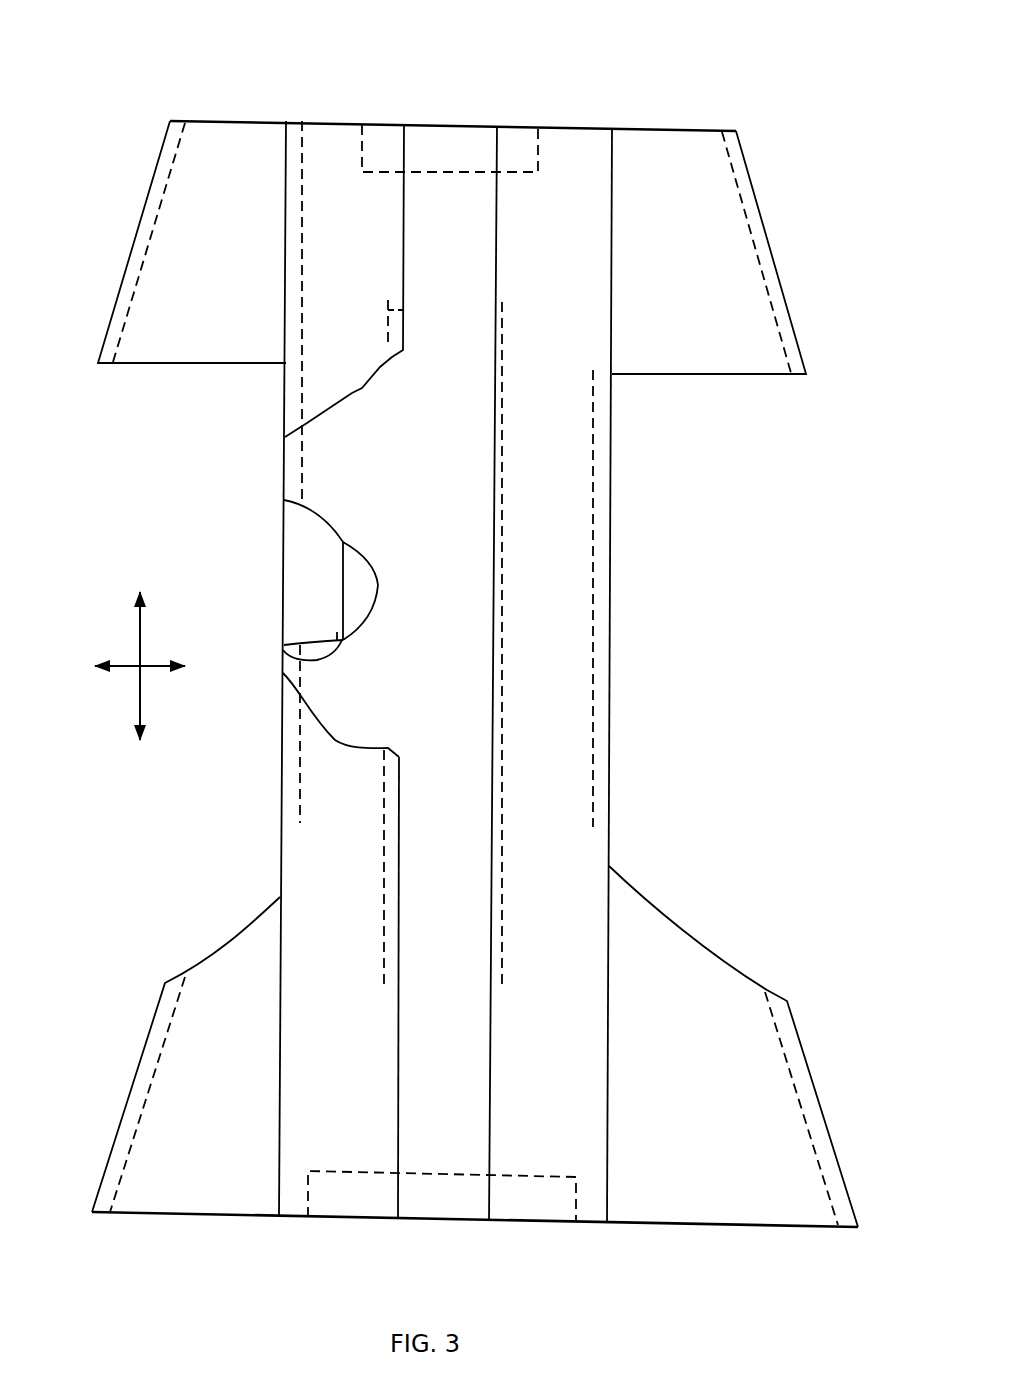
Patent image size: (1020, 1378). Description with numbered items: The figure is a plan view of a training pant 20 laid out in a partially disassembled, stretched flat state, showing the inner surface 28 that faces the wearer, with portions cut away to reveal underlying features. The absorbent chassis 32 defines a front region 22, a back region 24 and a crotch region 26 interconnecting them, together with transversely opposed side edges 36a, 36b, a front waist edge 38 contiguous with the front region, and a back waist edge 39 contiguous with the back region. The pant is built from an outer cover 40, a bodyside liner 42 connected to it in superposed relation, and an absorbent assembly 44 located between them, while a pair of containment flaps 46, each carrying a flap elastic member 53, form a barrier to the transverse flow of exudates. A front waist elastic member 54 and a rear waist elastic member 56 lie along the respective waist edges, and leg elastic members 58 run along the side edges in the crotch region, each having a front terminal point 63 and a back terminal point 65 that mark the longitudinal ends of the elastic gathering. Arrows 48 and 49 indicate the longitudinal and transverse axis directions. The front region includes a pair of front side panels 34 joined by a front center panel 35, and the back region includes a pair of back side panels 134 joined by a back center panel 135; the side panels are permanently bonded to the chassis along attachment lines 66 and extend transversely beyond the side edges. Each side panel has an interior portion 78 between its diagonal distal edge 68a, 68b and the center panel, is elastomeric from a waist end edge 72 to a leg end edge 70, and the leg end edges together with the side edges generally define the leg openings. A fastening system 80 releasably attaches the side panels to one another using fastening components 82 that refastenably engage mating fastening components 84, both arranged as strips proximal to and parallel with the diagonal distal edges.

The training pant 20 is at (222, 116).
The front region 22 is at (150, 153).
The back region 24 is at (752, 955).
The crotch region 26 is at (629, 736).
The inner surface 28 is at (663, 1226).
The absorbent chassis 32 is at (614, 700).
The front side panels 34 is at (195, 270).
The front center panel 35 is at (375, 198).
The side edge 36a is at (611, 813).
The side edge 36b is at (282, 775).
The front waist edge 38 is at (340, 121).
The back waist edge 39 is at (292, 1220).
The outer cover 40 is at (284, 648).
The bodyside liner 42 is at (432, 486).
The absorbent assembly 44 is at (357, 598).
The containment flaps 46 is at (390, 225).
The arrow 48 is at (140, 630).
The arrow 49 is at (120, 680).
The flap elastic member 53 is at (405, 310).
The front waist elastic member 54 is at (455, 130).
The rear waist elastic member 56 is at (560, 1215).
The leg elastic members 58 is at (290, 470).
The front terminal point 63 is at (303, 362).
The back terminal point 65 is at (302, 828).
The attachment lines 66 is at (286, 305).
The diagonal distal edge 68a is at (98, 363).
The diagonal distal edge 68b is at (92, 1212).
The leg end edge 70 is at (240, 365).
The waist end edge 72 is at (262, 120).
The interior portion 78 is at (242, 1120).
The fastening system 80 is at (768, 268).
The fastening components 82 is at (147, 213).
The mating fastening components 84 is at (142, 1050).
The back side panels 134 is at (250, 1071).
The back center panel 135 is at (350, 1152).